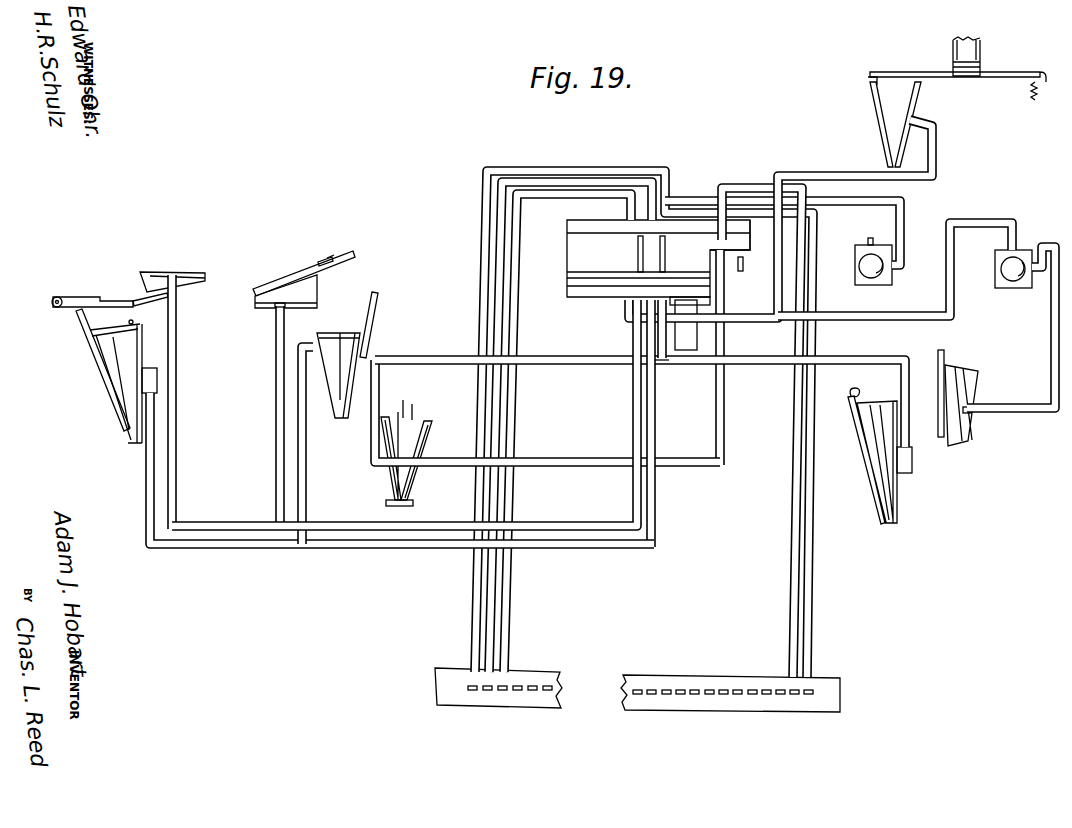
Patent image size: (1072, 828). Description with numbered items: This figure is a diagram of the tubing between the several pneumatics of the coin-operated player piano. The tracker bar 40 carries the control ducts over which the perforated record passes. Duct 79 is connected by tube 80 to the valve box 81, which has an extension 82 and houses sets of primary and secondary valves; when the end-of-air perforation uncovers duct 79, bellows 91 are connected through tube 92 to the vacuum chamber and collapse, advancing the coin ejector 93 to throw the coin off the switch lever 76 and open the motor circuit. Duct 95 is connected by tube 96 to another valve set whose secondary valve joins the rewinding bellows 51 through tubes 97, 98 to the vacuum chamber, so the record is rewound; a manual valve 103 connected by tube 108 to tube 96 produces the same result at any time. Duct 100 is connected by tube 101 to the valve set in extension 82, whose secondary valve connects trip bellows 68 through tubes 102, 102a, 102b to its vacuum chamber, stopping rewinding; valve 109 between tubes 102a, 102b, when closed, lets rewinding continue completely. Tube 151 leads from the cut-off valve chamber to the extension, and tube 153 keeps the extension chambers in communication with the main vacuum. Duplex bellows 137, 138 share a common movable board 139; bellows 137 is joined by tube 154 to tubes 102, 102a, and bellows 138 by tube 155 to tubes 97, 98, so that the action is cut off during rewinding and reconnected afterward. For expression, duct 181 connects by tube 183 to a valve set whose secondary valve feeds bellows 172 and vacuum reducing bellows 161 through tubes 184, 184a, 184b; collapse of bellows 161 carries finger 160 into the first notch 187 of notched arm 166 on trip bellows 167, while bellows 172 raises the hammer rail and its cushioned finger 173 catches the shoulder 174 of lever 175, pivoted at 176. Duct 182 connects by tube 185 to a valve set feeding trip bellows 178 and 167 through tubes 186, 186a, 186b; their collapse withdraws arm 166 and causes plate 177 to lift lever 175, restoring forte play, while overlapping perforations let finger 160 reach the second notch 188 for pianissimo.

The tracker bar 40 is at (440, 688).
The rewinding bellows 51 is at (878, 456).
The trip bellows 68 is at (975, 376).
The switch lever 76 is at (1005, 78).
The duct 79 is at (808, 697).
The tube 80 is at (809, 584).
The valve box 81 is at (658, 262).
The extension 82 is at (737, 232).
The bellows 91 is at (898, 109).
The tube 92 is at (835, 176).
The coin ejector 93 is at (931, 72).
The duct 95 is at (472, 692).
The tube 96 is at (660, 224).
The tube 97 is at (664, 358).
The tube 98 is at (774, 367).
The duct 100 is at (792, 698).
The tube 101 is at (795, 521).
The tube 102 is at (723, 290).
The tube 102a is at (877, 314).
The tube 102b is at (1052, 318).
The valve 103 is at (881, 282).
The tube 108 is at (850, 203).
The valve 109 is at (998, 282).
The duplex bellows 137 is at (414, 448).
The duplex bellows 138 is at (398, 448).
The common movable board 139 is at (404, 418).
The tube 151 is at (698, 340).
The tube 153 is at (743, 266).
The tube 154 is at (578, 462).
The tube 155 is at (559, 363).
The finger 160 is at (376, 310).
The vacuum reducing bellows 161 is at (331, 342).
The notched arm 166 is at (354, 258).
The trip bellows 167 is at (300, 290).
The bellows 172 is at (112, 365).
The cushioned finger 173 is at (82, 321).
The shoulder 174 is at (128, 322).
The lever 175 is at (85, 297).
The pivot 176 is at (56, 298).
The plate 177 is at (152, 308).
The trip bellows 178 is at (153, 278).
The duct 181 is at (488, 692).
The duct 182 is at (505, 692).
The tube 183 is at (493, 605).
The tube 184 is at (653, 428).
The tube 184a is at (196, 546).
The tube 184b is at (303, 463).
The tube 185 is at (512, 496).
The tube 186 is at (319, 526).
The tube 186a is at (168, 477).
The tube 186b is at (278, 428).
The first notch 187 is at (331, 257).
The second notch 188 is at (320, 263).